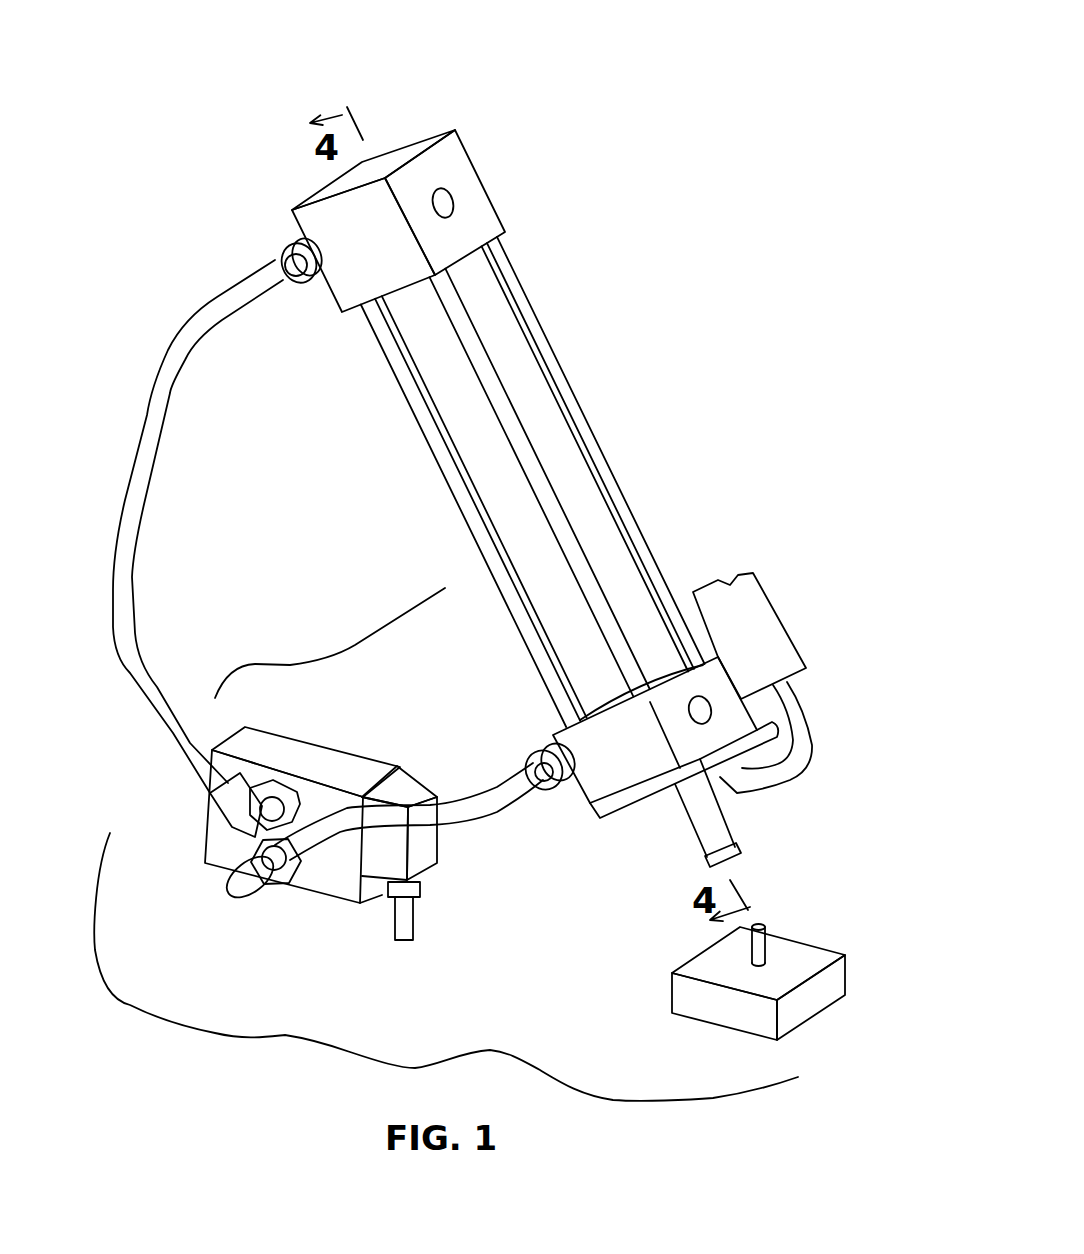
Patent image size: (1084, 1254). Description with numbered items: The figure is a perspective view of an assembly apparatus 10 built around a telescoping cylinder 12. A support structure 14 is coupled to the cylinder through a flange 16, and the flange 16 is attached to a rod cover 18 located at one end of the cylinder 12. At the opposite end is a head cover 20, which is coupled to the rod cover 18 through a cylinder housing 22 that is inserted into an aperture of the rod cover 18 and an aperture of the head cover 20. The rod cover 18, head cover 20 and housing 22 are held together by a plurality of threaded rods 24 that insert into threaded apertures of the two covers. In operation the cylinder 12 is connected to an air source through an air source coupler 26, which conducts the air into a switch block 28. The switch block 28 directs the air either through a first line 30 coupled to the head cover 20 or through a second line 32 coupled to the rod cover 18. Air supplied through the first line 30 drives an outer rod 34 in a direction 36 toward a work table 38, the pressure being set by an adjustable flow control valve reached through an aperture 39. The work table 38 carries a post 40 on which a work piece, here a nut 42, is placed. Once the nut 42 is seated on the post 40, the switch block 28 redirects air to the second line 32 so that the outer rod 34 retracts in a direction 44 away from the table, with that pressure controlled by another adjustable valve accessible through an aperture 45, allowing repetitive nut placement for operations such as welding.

The assembly apparatus 10 is at (606, 120).
The telescoping cylinder 12 is at (542, 394).
The support structure 14 is at (760, 647).
The flange 16 is at (615, 800).
The rod cover 18 is at (600, 770).
The head cover 20 is at (453, 177).
The cylinder housing 22 is at (498, 348).
The threaded rods 24 is at (460, 322).
The air source coupler 26 is at (380, 913).
The switch block 28 is at (315, 763).
The first line 30 is at (157, 430).
The second line 32 is at (475, 810).
The outer rod 34 is at (707, 822).
The direction 36 is at (852, 819).
The work table 38 is at (835, 987).
The aperture 39 is at (443, 207).
The post 40 is at (758, 952).
The nut 42 is at (740, 858).
The direction 44 is at (672, 866).
The aperture 45 is at (700, 707).